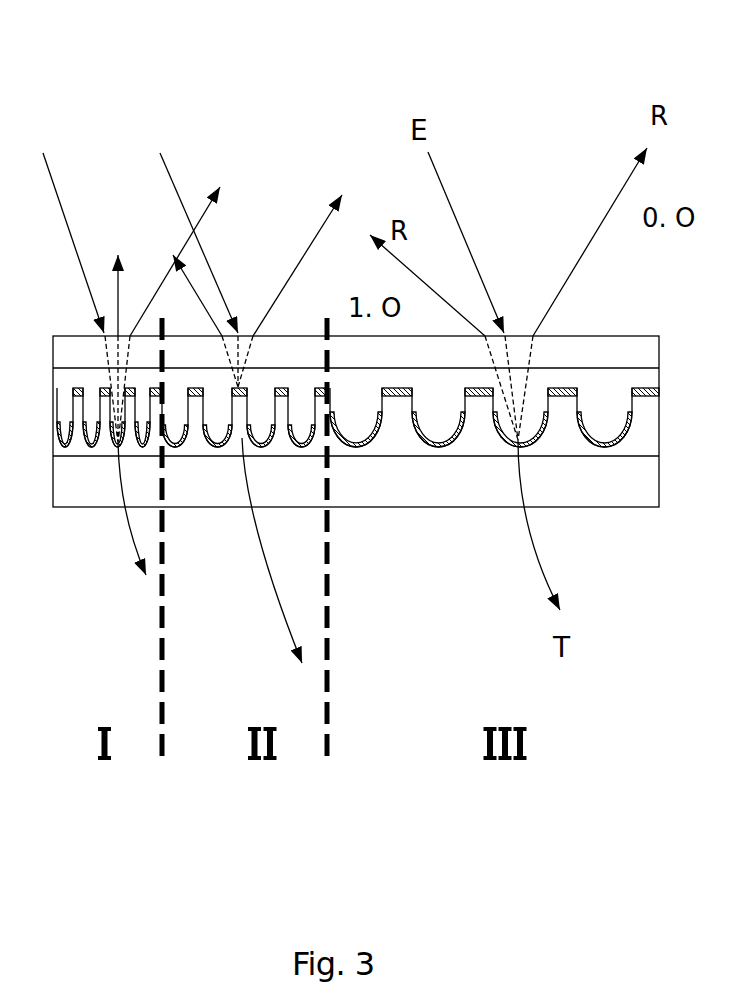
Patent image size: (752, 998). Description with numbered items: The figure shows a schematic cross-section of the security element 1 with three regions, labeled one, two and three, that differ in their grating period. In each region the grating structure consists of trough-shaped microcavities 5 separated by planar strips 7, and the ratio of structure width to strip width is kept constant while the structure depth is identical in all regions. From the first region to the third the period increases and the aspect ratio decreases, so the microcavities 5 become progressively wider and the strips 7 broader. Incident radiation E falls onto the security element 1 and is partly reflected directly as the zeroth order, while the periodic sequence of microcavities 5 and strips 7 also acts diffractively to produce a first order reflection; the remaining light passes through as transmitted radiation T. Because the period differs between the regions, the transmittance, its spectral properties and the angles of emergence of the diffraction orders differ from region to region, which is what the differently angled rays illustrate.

The security element 1 is at (522, 97).
The microcavities 5 is at (433, 415).
The strip 7 is at (393, 392).